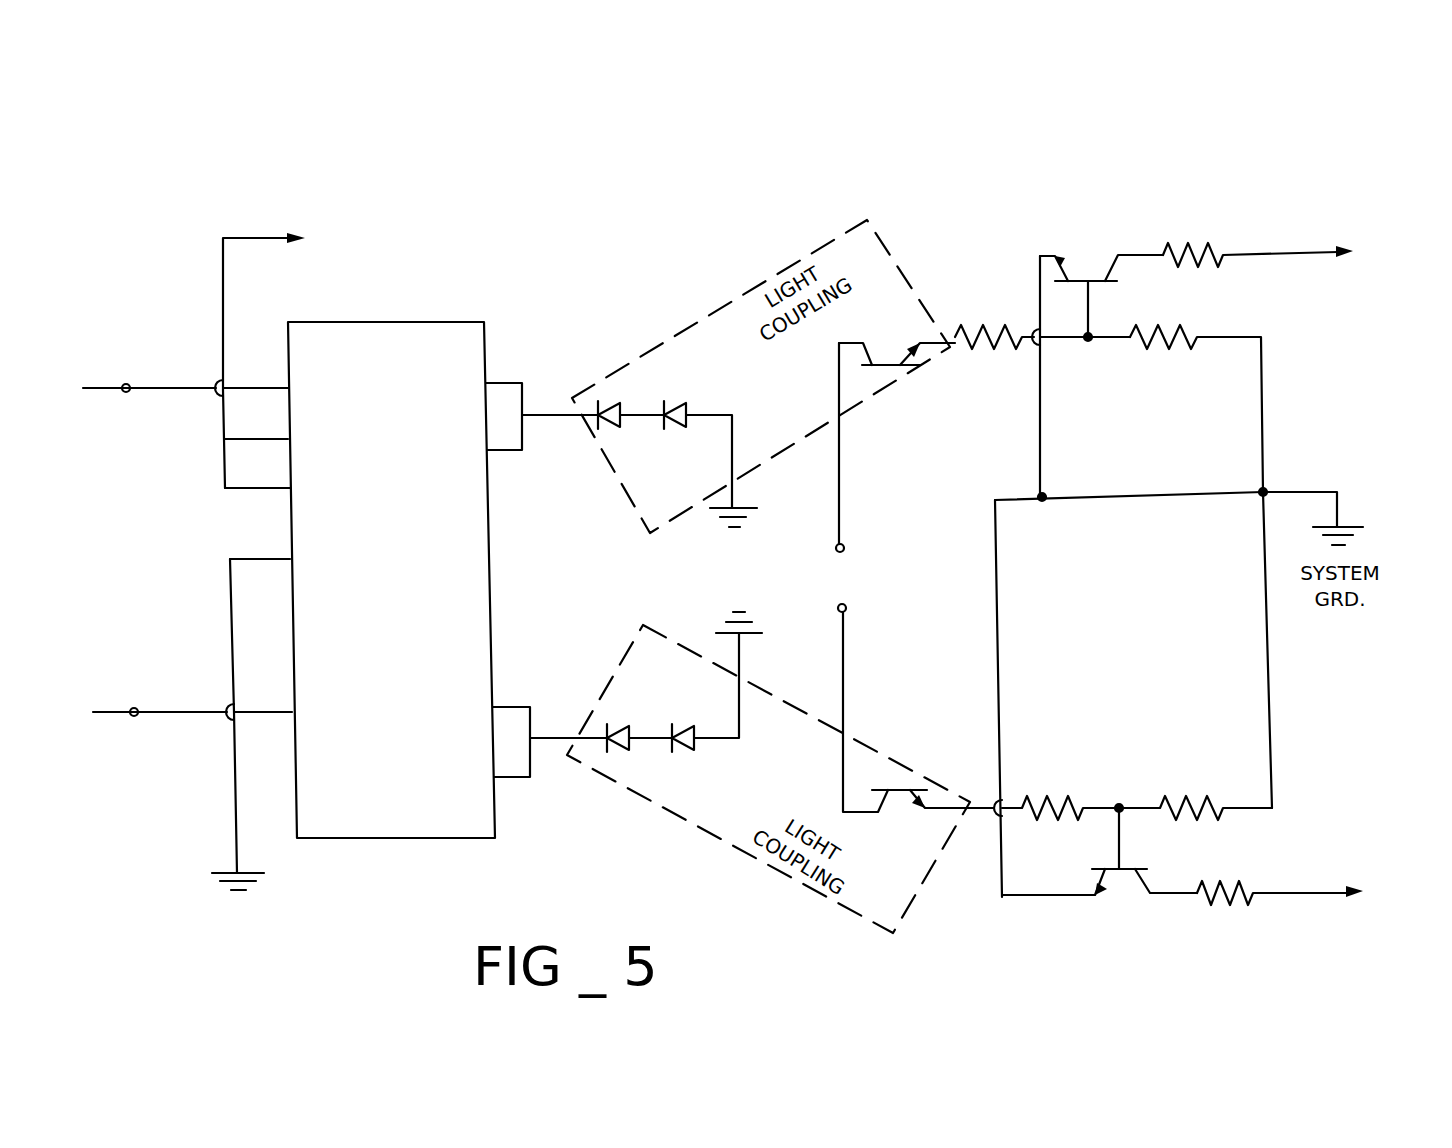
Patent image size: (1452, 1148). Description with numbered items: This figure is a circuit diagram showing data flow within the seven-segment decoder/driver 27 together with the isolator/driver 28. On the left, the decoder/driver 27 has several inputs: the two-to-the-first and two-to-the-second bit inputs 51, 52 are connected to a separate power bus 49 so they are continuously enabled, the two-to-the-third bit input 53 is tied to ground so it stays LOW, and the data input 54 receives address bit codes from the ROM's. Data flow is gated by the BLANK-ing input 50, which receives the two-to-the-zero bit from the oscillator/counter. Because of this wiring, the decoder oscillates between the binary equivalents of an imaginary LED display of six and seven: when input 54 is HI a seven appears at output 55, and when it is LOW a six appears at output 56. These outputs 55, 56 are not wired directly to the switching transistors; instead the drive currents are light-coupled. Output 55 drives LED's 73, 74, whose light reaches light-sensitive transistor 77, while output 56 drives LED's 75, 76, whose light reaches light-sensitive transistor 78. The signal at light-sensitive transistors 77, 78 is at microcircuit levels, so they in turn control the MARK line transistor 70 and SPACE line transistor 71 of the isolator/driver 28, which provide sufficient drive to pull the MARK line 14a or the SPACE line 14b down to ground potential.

The MARK line 14a is at (1291, 257).
The SPACE line 14b is at (1309, 896).
The 7-segment decoder/driver 27 is at (456, 299).
The isolator/driver 28 is at (968, 284).
The power bus 49 is at (252, 237).
The BLANK-ing input 50 is at (292, 714).
The 2^1 bit input 51 is at (287, 437).
The 2^2 bit input 52 is at (288, 490).
The 2^3 bit input 53 is at (290, 562).
The data input 54 is at (287, 383).
The output 55 is at (534, 412).
The output 56 is at (571, 735).
The MARK line transistor 70 is at (1085, 270).
The SPACE line transistor 71 is at (1125, 873).
The LED 73 is at (615, 405).
The LED 74 is at (680, 405).
The LED 75 is at (627, 752).
The LED 76 is at (692, 752).
The light-sensitive transistor 77 is at (893, 356).
The light-sensitive transistor 78 is at (901, 796).